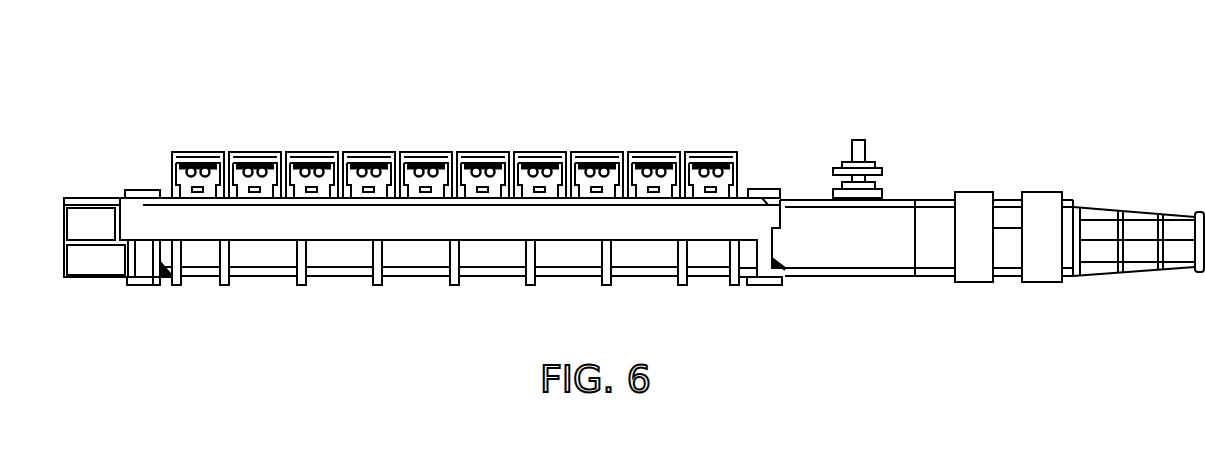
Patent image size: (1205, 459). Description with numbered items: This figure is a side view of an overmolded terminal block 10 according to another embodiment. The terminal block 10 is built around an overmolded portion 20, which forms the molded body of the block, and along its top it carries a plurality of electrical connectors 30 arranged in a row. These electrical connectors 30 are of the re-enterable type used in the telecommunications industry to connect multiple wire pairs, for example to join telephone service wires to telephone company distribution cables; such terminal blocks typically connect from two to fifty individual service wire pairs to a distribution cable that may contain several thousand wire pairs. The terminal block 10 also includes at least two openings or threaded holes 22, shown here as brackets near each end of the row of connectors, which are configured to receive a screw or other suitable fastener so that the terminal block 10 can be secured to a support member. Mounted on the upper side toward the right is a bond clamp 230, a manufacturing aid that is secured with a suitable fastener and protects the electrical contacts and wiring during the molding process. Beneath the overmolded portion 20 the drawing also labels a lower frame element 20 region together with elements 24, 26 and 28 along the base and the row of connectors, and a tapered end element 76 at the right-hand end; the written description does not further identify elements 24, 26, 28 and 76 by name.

The overmolded terminal block 10 is at (634, 173).
The overmolded portion 20 is at (458, 290).
The threaded holes 22 is at (136, 180).
The support leg 24 is at (226, 292).
The processing module 26 is at (453, 190).
The support post 28 is at (348, 293).
The electrical connector 30 is at (714, 162).
The tapered outlet section 76 is at (1143, 255).
The bond clamp 230 is at (859, 130).